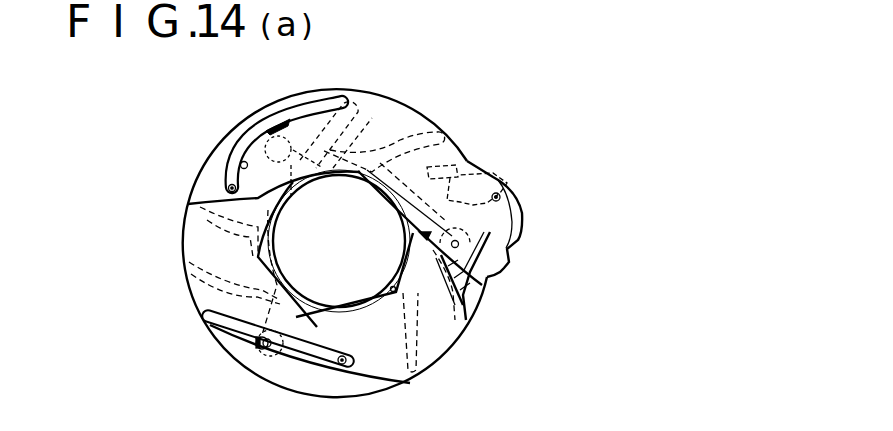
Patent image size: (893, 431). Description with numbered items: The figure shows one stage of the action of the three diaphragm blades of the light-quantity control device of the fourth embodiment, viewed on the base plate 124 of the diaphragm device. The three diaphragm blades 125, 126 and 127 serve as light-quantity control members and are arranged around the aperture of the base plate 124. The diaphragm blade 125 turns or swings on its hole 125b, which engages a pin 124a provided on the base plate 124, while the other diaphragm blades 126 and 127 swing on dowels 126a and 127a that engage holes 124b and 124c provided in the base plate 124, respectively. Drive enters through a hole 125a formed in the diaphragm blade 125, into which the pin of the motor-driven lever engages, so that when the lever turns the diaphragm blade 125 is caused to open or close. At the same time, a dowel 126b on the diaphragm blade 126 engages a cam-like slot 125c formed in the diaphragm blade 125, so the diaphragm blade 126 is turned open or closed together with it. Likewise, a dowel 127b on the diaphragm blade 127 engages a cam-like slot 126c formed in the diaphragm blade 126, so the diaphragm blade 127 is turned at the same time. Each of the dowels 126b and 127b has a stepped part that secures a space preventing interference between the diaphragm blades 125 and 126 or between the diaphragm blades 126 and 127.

The base plate 124 is at (512, 228).
The pin 124a is at (513, 294).
The hole 124b is at (284, 130).
The hole 124c is at (199, 366).
The diaphragm blade 125 is at (447, 148).
The hole 125a is at (498, 186).
The hole 125b is at (460, 267).
The cam-like slot 125c is at (262, 157).
The diaphragm blade 126 is at (196, 292).
The dowel 126a is at (267, 127).
The dowel 126b is at (212, 184).
The cam-like slot 126c is at (280, 352).
The diaphragm blade 127 is at (444, 328).
The dowel 127a is at (256, 347).
The dowel 127b is at (345, 372).